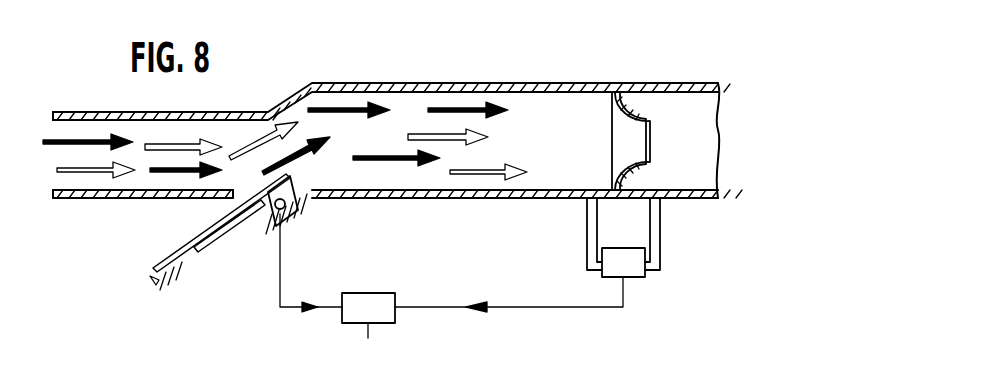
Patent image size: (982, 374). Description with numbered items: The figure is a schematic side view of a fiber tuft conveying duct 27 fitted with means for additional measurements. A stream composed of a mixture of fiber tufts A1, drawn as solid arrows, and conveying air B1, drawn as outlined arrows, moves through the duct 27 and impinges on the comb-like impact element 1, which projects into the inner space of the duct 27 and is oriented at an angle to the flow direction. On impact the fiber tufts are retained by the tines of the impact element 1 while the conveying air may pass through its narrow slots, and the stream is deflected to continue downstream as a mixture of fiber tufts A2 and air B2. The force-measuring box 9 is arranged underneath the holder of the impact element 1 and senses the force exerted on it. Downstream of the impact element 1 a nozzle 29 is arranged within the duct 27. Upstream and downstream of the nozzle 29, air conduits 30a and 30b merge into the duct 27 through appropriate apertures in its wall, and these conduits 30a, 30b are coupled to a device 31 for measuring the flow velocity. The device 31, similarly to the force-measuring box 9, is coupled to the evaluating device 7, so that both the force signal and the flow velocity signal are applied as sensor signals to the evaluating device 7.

The fiber tuft conveying duct 27 is at (540, 90).
The nozzle 29 is at (634, 95).
The air conduit 30a is at (590, 232).
The air conduit 30b is at (657, 238).
The device for measuring the flow velocity 31 is at (636, 279).
The evaluating device 7 is at (281, 331).
The force-measuring box 9 is at (265, 206).
The impact element 1 is at (204, 212).
The fiber tufts (incoming stream) A1 is at (68, 140).
The air (incoming stream) B1 is at (90, 174).
The fiber tufts (deflected stream) A2 is at (459, 106).
The air (deflected stream) B2 is at (470, 176).